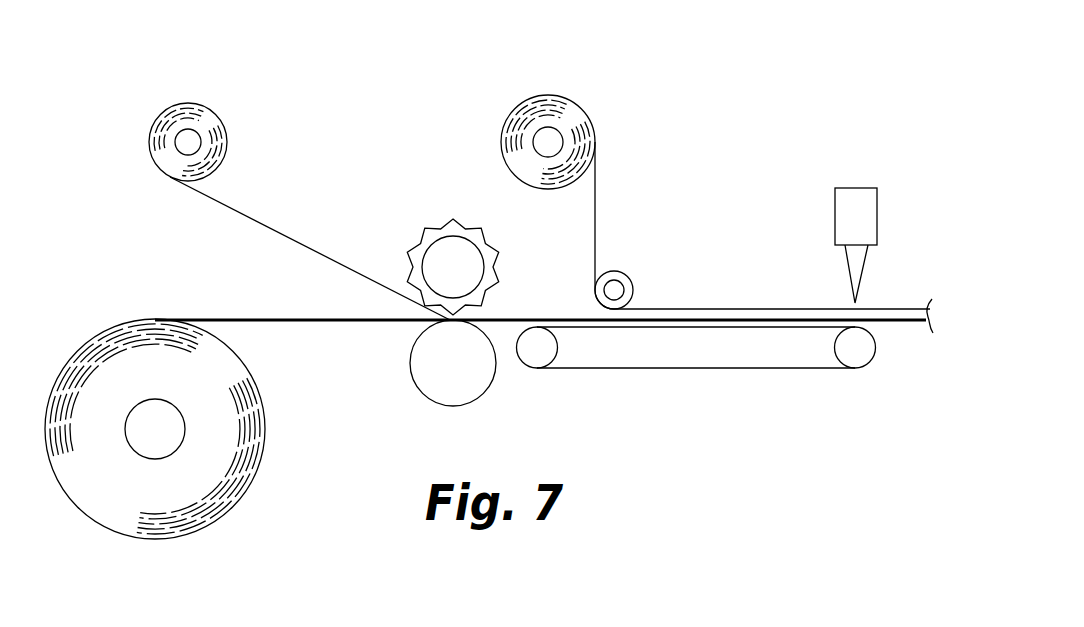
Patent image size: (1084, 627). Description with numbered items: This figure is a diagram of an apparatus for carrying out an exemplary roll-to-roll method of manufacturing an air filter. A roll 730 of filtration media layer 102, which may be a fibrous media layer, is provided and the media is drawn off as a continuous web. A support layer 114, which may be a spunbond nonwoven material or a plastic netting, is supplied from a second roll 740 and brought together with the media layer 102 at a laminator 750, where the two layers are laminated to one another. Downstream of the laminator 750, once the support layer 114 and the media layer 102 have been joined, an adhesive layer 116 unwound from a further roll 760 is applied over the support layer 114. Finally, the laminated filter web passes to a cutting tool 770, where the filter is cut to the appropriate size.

The roll 730 is at (87, 507).
The roll 740 is at (210, 112).
The support layer 114 is at (292, 242).
The laminator 750 is at (463, 248).
The filtration media layer 102 is at (308, 322).
The roll 760 is at (568, 118).
The adhesive layer 116 is at (598, 232).
The cutting tool 770 is at (853, 200).